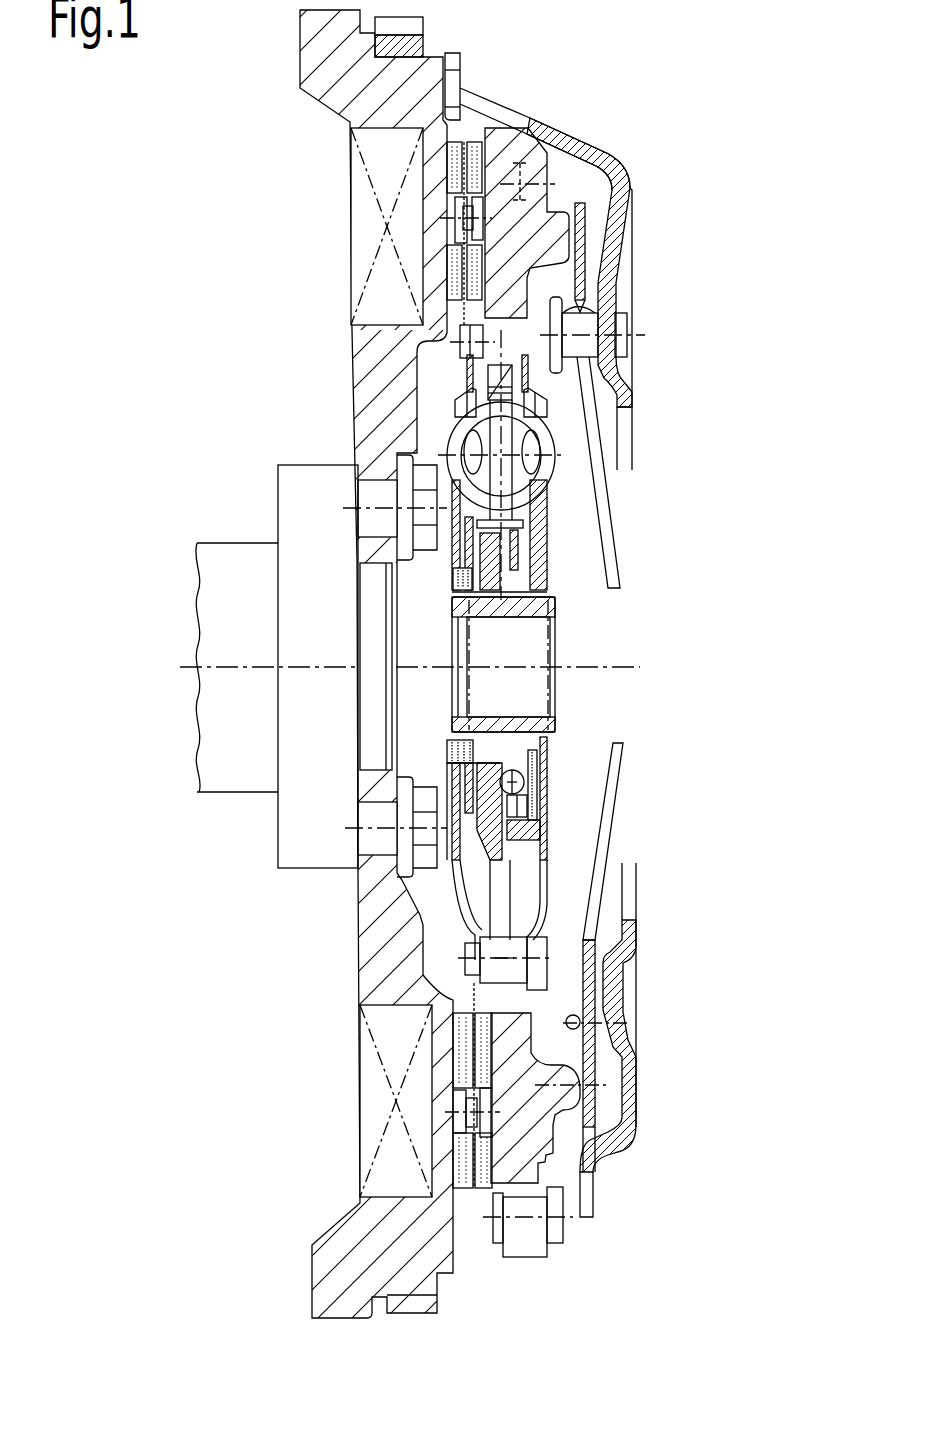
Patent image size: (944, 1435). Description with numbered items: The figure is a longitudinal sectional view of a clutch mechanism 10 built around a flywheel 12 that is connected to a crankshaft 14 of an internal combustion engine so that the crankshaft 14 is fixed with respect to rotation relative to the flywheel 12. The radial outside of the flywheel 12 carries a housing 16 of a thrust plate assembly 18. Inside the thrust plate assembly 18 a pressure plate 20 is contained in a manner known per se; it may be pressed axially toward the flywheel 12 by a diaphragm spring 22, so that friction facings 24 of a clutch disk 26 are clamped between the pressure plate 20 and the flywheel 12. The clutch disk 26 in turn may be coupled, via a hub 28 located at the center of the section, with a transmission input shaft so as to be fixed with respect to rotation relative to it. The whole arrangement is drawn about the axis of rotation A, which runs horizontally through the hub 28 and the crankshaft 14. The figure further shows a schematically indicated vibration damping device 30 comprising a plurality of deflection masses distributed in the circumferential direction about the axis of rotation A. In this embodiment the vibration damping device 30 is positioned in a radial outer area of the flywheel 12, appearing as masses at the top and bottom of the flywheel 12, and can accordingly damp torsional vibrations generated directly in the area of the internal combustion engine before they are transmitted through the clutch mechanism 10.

The clutch mechanism 10 is at (593, 127).
The flywheel 12 is at (323, 100).
The crankshaft 14 is at (220, 793).
The housing 16 is at (628, 180).
The thrust plate assembly 18 is at (663, 300).
The pressure plate 20 is at (546, 1105).
The diaphragm spring 22 is at (615, 808).
The friction facings 24 is at (460, 1028).
The clutch disk 26 is at (568, 760).
The hub 28 is at (557, 628).
The vibration damping device 30 is at (352, 257).
The axis of rotation A is at (610, 667).